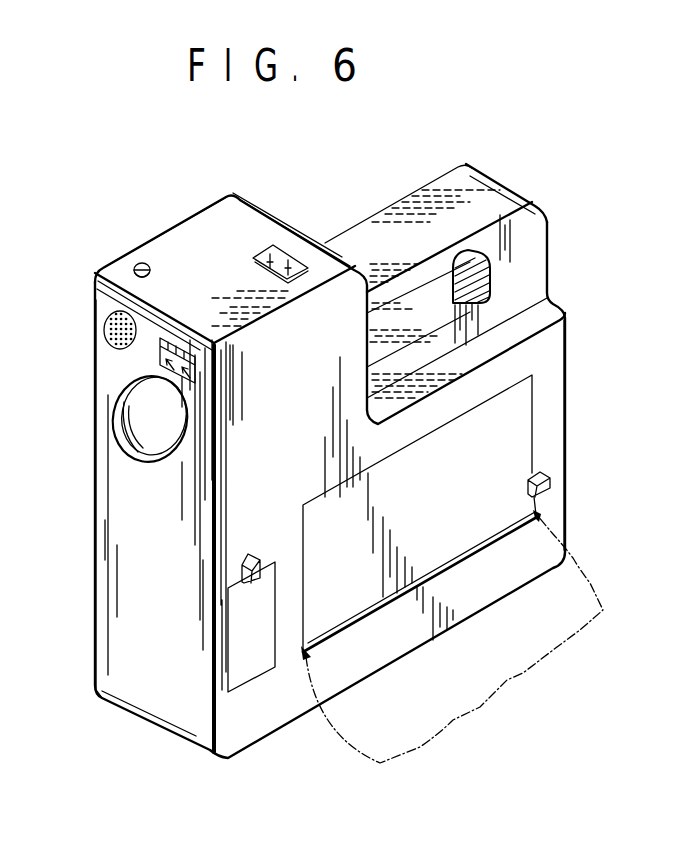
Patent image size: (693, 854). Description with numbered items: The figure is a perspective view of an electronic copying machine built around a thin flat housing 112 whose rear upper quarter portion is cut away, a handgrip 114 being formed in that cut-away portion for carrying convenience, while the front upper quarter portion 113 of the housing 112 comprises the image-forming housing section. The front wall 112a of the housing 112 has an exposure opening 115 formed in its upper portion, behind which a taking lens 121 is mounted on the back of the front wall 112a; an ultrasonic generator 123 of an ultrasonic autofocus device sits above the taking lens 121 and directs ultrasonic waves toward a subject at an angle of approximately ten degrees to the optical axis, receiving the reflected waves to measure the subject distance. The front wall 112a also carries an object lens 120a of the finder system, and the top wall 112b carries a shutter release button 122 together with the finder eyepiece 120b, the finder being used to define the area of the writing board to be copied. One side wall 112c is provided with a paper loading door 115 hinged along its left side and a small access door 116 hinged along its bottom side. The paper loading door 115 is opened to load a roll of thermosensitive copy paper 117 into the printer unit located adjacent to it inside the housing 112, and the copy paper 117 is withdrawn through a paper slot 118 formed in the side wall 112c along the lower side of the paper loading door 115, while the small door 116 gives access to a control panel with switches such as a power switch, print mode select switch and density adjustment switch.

The housing 112 is at (567, 423).
The front wall 112a is at (113, 625).
The top wall 112b is at (258, 216).
The side wall 112c is at (560, 463).
The front upper quarter portion 113 is at (177, 226).
The handgrip 114 is at (442, 197).
The paper loading door 115 is at (525, 396).
The small access door 116 is at (257, 668).
The thermosensitive copy paper 117 is at (535, 652).
The paper slot 118 is at (317, 662).
The object lens 120a is at (188, 370).
The eyepiece 120b is at (266, 271).
The taking lens 121 is at (117, 418).
The shutter release button 122 is at (137, 263).
The ultrasonic generator 123 is at (102, 326).